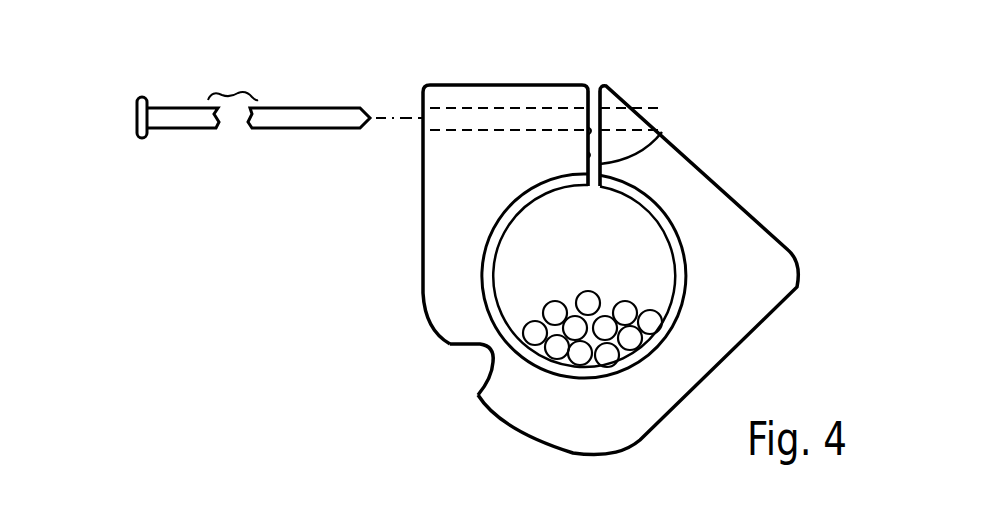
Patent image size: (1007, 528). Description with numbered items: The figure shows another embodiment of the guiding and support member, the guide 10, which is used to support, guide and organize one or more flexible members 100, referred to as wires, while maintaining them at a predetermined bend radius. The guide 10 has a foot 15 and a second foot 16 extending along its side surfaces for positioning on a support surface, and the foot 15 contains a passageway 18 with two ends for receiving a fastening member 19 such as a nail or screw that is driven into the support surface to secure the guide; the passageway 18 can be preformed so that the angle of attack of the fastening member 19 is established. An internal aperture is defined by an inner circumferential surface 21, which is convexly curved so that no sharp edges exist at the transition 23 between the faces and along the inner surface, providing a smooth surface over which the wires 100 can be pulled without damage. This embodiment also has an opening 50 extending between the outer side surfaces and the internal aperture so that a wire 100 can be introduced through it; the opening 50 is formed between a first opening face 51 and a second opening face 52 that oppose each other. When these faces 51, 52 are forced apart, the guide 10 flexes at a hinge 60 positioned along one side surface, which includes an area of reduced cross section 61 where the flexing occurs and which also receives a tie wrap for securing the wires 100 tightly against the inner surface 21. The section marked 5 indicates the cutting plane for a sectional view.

The guide 10 is at (527, 243).
The foot 15 is at (790, 250).
The second foot 16 is at (422, 183).
The passageway 18 is at (482, 112).
The fastening member 19 is at (184, 114).
The inner circumferential surface 21 is at (663, 280).
The transition 23 is at (488, 236).
The opening 50 is at (601, 83).
The first opening face 51 is at (660, 131).
The second opening face 52 is at (587, 142).
The hinge 60 is at (470, 375).
The area of reduced cross section 61 is at (460, 356).
The flexible member 100 is at (610, 352).
The section line 5- 5 is at (722, 178).